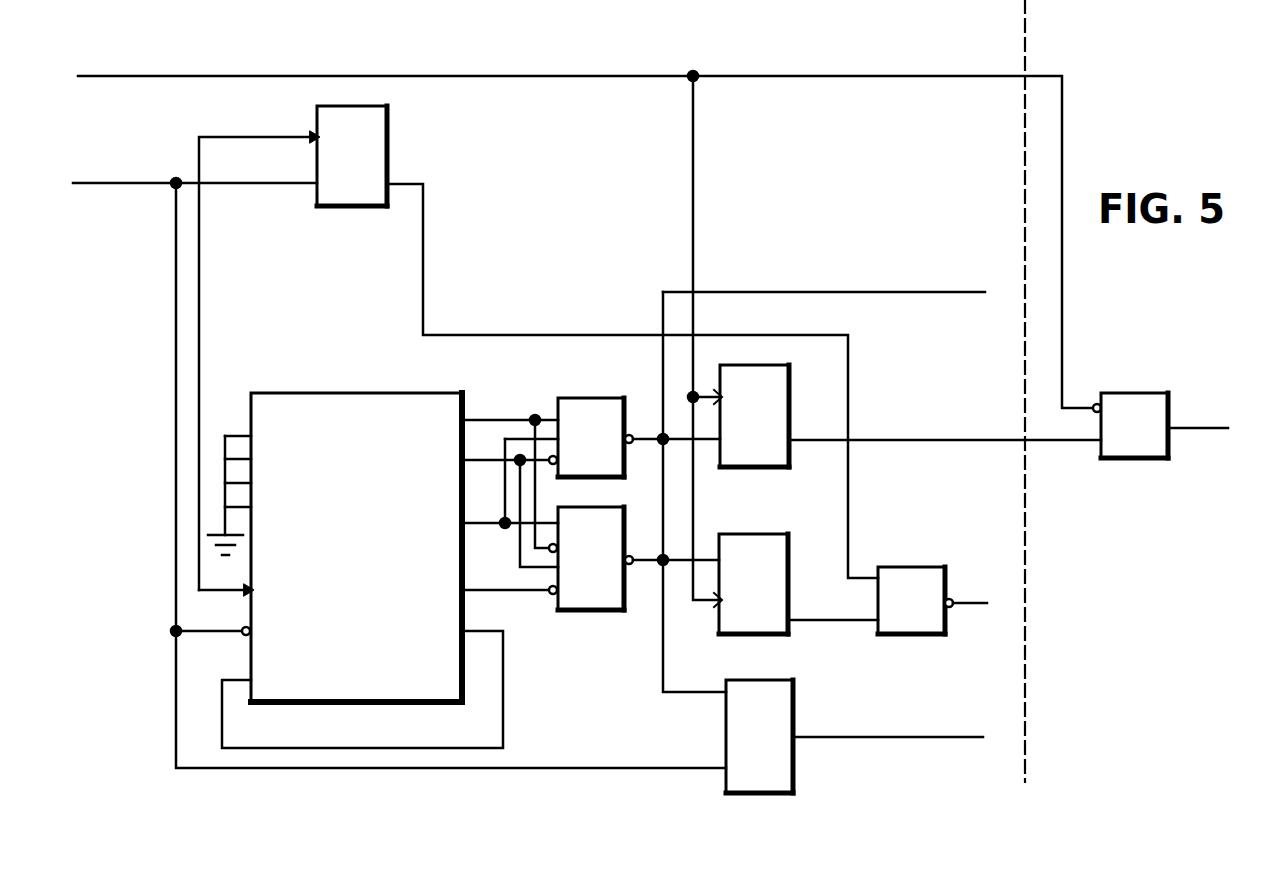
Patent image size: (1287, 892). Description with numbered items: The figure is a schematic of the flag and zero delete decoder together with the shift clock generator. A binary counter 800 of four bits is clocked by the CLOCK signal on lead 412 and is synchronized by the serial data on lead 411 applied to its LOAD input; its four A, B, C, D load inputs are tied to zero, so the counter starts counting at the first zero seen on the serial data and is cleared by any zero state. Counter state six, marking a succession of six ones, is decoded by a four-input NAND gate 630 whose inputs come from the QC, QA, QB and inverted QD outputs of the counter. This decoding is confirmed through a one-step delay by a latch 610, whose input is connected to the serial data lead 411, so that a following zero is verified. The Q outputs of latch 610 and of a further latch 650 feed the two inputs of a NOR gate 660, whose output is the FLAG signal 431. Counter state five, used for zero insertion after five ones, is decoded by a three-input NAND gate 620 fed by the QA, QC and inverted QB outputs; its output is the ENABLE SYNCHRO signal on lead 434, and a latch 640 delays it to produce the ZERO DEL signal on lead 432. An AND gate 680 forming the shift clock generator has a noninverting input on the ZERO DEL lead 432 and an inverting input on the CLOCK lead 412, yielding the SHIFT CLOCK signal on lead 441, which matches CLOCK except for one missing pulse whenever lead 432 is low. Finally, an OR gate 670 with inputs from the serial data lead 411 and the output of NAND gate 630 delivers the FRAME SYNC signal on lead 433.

The CLOCK lead 412 is at (243, 76).
The serial data lead 411 is at (240, 183).
The latch 610 is at (368, 106).
The binary counter 4 bits 800 is at (427, 393).
The three-input NAND gate 620 is at (598, 398).
The four-input NAND gate 630 is at (588, 507).
The latch 640 is at (770, 365).
The latch 650 is at (765, 534).
The NOR gate 660 is at (905, 567).
The OR gate 670 is at (770, 680).
The AND gate 680 is at (1110, 393).
The ZERO DEL lead 432 is at (1015, 440).
The ENABLE SYNCHRO lead 434 is at (920, 292).
The FLAG signal 431 is at (965, 606).
The FRAME SYNC lead 433 is at (905, 737).
The SHIFT CLOCK lead 441 is at (1211, 475).